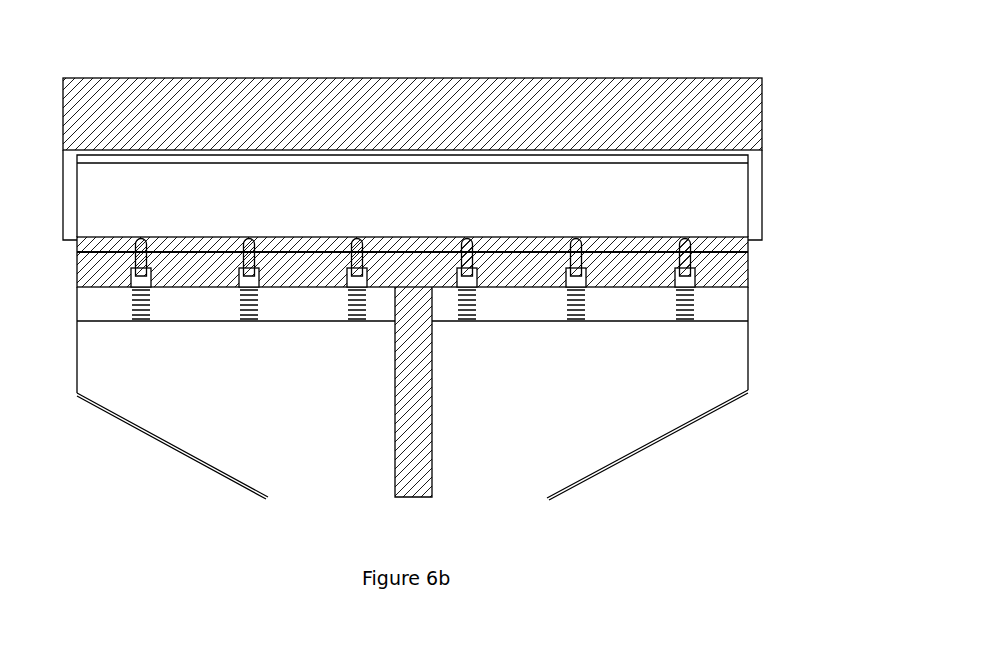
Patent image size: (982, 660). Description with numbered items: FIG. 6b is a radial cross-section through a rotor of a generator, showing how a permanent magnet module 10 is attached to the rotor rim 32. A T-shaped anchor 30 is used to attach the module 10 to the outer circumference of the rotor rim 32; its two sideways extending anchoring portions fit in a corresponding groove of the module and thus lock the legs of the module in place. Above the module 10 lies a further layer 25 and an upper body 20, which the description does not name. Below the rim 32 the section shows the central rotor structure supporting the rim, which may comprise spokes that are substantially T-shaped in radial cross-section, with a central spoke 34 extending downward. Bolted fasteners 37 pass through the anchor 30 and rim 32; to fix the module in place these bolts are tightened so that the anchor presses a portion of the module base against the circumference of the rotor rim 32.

The permanent magnet module 10 is at (113, 202).
The upper block 20 is at (370, 108).
The sealing layer 25 is at (262, 163).
The T-shaped anchor 30 is at (717, 240).
The rotor rim 32 is at (93, 265).
The central post 34 is at (410, 467).
The spring-loaded bolt 37 is at (141, 268).